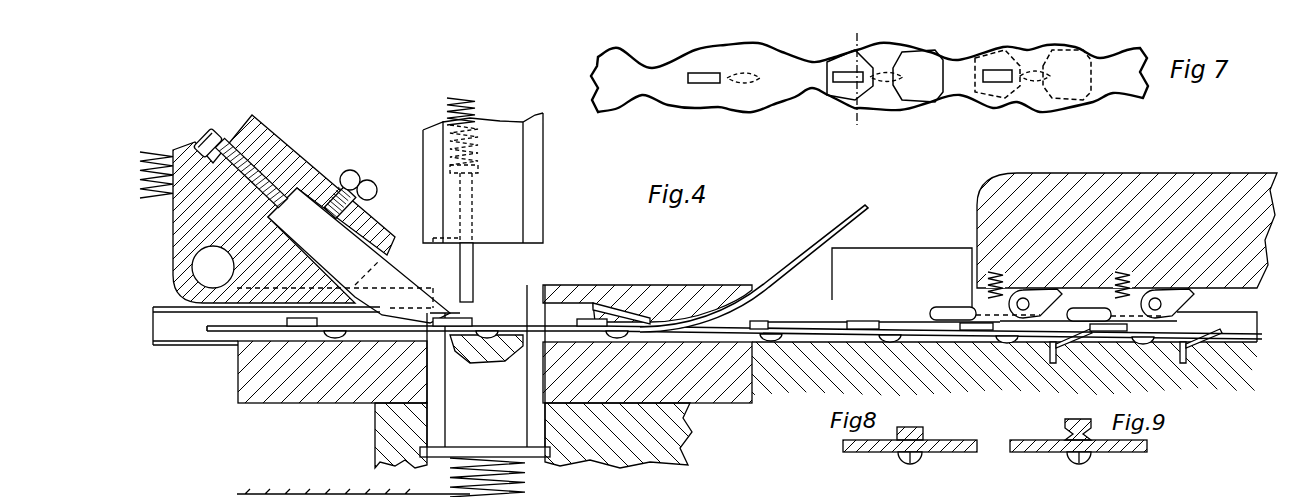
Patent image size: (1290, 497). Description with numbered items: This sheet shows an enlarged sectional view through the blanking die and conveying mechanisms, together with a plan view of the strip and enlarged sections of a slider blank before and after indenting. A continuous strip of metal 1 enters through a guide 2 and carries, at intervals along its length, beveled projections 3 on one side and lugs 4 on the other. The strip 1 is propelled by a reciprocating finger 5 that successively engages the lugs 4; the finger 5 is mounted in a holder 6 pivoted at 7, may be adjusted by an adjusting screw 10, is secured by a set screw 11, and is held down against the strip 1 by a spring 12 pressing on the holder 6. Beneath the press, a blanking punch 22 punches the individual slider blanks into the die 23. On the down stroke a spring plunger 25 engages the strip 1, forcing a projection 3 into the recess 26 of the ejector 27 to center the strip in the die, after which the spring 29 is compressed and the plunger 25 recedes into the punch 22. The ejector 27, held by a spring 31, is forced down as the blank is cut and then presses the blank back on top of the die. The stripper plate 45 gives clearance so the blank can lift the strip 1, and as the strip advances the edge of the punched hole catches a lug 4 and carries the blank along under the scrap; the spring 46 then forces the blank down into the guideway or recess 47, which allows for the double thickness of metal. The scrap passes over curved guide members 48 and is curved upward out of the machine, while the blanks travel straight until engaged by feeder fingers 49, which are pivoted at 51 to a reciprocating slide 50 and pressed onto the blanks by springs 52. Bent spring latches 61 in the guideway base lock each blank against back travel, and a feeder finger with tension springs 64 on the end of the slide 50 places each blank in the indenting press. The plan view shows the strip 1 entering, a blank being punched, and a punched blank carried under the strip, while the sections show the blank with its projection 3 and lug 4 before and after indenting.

In FIG. 4, the continuous strip of metal 1 is at (227, 329).
In FIG. 7, the continuous strip of metal 1 is at (762, 104).
In FIG. 4, the guide 2 is at (227, 344).
In FIG. 4, the beveled projections 3 is at (333, 342).
In FIG. 7, the beveled projections 3 is at (752, 78).
In FIG. 8, the beveled projections 3 is at (920, 459).
In FIG. 9, the beveled projections 3 is at (1092, 459).
In FIG. 4, the lugs 4 is at (318, 321).
In FIG. 7, the lugs 4 is at (688, 78).
In FIG. 8, the lugs 4 is at (913, 428).
In FIG. 9, the lugs 4 is at (1067, 420).
In FIG. 4, the reciprocating finger 5 is at (395, 276).
In FIG. 4, the holder 6 is at (305, 170).
In FIG. 4, the pivot 7 is at (198, 263).
In FIG. 4, the adjusting screw 10 is at (211, 127).
In FIG. 4, the set screw 11 is at (360, 170).
In FIG. 4, the spring 12 is at (150, 150).
In FIG. 4, the blanking punch 22 is at (545, 167).
In FIG. 4, the die 23 is at (368, 403).
In FIG. 4, the spring plunger 25 is at (470, 280).
In FIG. 4, the recess 26 is at (484, 359).
In FIG. 4, the ejector 27 is at (543, 413).
In FIG. 4, the spring 29 is at (452, 100).
In FIG. 4, the spring 31 is at (525, 466).
In FIG. 4, the stripper plate 45 is at (697, 284).
In FIG. 4, the spring 46 is at (637, 316).
In FIG. 4, the guideway or recess 47 is at (593, 346).
In FIG. 4, the curved guide members 48 is at (888, 247).
In FIG. 4, the feeder fingers 49 is at (937, 309).
In FIG. 4, the slide 50 is at (1185, 173).
In FIG. 4, the pivot 51 is at (1000, 301).
In FIG. 4, the springs 52 is at (988, 286).
In FIG. 4, the latches 61 is at (1052, 364).
In FIG. 4, the tension springs 64 is at (435, 496).